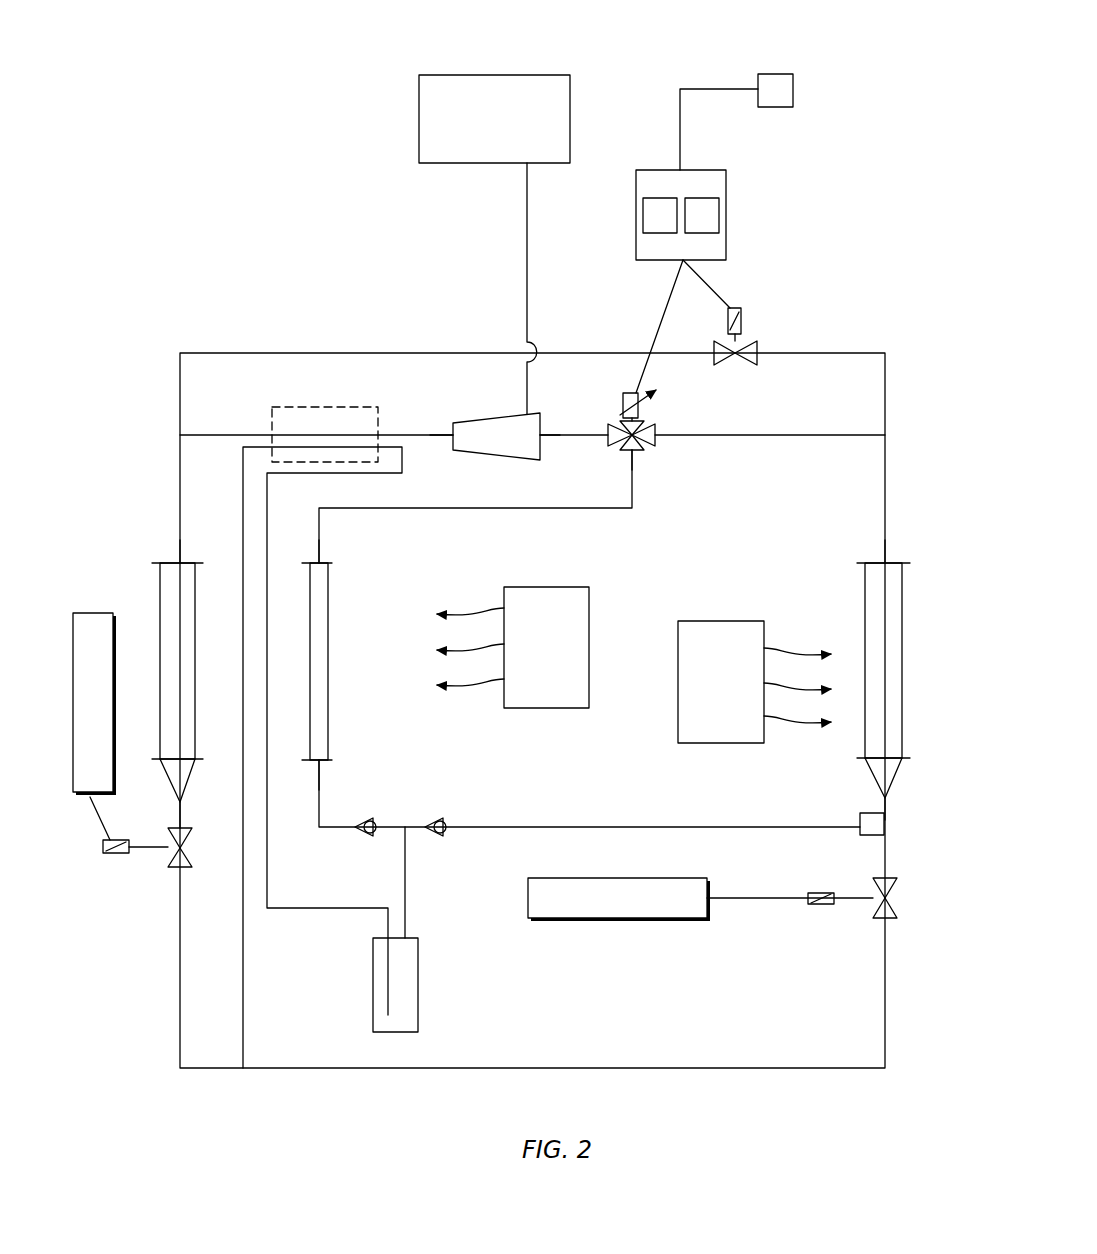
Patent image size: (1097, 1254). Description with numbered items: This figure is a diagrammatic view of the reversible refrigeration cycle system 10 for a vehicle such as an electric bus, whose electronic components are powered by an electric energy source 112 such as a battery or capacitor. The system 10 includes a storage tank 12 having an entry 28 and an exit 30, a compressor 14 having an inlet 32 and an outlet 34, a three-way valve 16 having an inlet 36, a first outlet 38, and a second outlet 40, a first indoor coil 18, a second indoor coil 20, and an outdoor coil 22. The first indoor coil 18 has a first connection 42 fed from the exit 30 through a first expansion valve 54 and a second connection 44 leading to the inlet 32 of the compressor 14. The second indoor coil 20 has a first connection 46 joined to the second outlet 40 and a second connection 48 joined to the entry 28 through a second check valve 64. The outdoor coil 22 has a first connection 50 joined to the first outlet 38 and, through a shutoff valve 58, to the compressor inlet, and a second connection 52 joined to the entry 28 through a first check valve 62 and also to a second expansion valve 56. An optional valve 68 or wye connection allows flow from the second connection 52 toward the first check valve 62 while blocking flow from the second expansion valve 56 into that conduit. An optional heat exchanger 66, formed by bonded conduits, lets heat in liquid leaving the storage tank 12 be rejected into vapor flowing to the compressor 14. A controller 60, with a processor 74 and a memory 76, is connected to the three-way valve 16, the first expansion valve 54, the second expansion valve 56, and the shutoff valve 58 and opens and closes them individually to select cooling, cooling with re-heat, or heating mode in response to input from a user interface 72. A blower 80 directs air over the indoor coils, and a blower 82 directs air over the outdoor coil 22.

The reversible refrigeration cycle system 10 is at (276, 316).
The storage tank 12 is at (422, 965).
The compressor 14 is at (510, 410).
The three-way valve 16 is at (652, 462).
The first indoor coil 18 is at (159, 612).
The second indoor coil 20 is at (331, 666).
The outdoor coil 22 is at (863, 617).
The entry 28 is at (405, 935).
The exit 30 is at (388, 935).
The inlet 32 is at (448, 434).
The outlet 34 is at (542, 429).
The inlet 36 is at (612, 433).
The first outlet 38 is at (655, 400).
The second outlet 40 is at (624, 455).
The first connection 42 is at (186, 802).
The second connection 44 is at (180, 563).
The first connection 46 is at (319, 560).
The second connection 48 is at (311, 762).
The first connection 50 is at (885, 563).
The second connection 52 is at (888, 800).
The first expansion valve 54 is at (166, 853).
The second expansion valve 56 is at (900, 897).
The shutoff valve 58 is at (746, 320).
The controller 60 is at (748, 178).
The first check valve 62 is at (440, 814).
The second check valve 64 is at (370, 814).
The heat exchanger 66 is at (271, 416).
The valve 68 is at (858, 815).
The user interface 72 is at (779, 74).
The processor 74 is at (643, 215).
The memory 76 is at (719, 213).
The blower 80 is at (537, 587).
The blower 82 is at (731, 621).
The electric energy source 112 is at (503, 75).